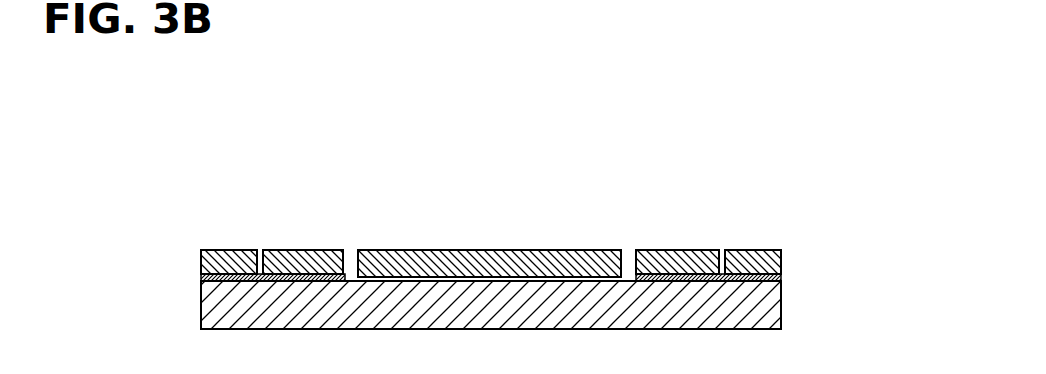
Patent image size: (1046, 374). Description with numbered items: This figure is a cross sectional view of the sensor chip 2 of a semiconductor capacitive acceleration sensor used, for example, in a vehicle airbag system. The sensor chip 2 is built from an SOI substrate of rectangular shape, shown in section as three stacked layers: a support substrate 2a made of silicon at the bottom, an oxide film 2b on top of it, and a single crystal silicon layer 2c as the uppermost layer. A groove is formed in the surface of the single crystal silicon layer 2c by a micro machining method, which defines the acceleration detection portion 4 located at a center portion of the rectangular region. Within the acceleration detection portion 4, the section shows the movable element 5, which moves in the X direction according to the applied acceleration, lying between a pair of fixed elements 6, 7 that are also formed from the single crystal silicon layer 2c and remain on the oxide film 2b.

The sensor chip 2 is at (536, 232).
The support substrate 2a is at (781, 308).
The oxide film 2b is at (781, 279).
The single crystal silicon layer 2c is at (529, 218).
The acceleration detection portion 4 is at (490, 201).
The movable element 5 is at (432, 249).
The fixed element 6 is at (295, 249).
The fixed element 7 is at (718, 213).